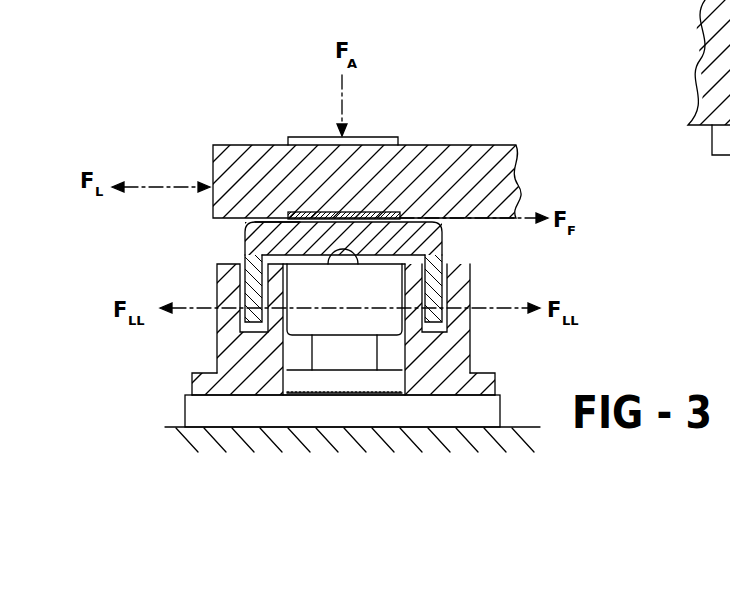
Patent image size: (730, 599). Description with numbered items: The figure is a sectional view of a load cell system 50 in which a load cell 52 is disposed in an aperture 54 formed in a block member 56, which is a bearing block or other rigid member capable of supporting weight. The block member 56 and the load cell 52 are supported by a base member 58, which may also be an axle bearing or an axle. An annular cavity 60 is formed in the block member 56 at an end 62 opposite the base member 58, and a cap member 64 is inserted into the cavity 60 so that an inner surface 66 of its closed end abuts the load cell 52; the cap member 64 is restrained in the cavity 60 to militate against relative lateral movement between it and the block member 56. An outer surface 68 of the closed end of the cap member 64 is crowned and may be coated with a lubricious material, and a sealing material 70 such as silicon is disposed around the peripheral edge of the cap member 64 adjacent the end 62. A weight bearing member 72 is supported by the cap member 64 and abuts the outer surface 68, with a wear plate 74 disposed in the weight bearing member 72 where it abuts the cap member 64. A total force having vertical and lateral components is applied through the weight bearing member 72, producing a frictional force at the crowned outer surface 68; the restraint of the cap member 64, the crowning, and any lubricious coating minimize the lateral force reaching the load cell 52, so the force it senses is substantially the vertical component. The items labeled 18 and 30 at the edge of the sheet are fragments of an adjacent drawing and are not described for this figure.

The load cell system 50 is at (112, 150).
The weight bearing member 72 is at (213, 163).
The wear plate 74 is at (392, 213).
The outer surface 68 is at (440, 217).
The inner surface 66 is at (248, 225).
The cap member 64 is at (445, 234).
The end 62 is at (447, 262).
The sealing material 70 is at (243, 254).
The load cell 52 is at (298, 326).
The annular cavity 60 is at (445, 348).
The block member 56 is at (447, 363).
The aperture 54 is at (416, 378).
The base member 58 is at (190, 415).
The adjacent figure block 18 is at (700, 5).
The adjacent figure element 30 is at (712, 145).